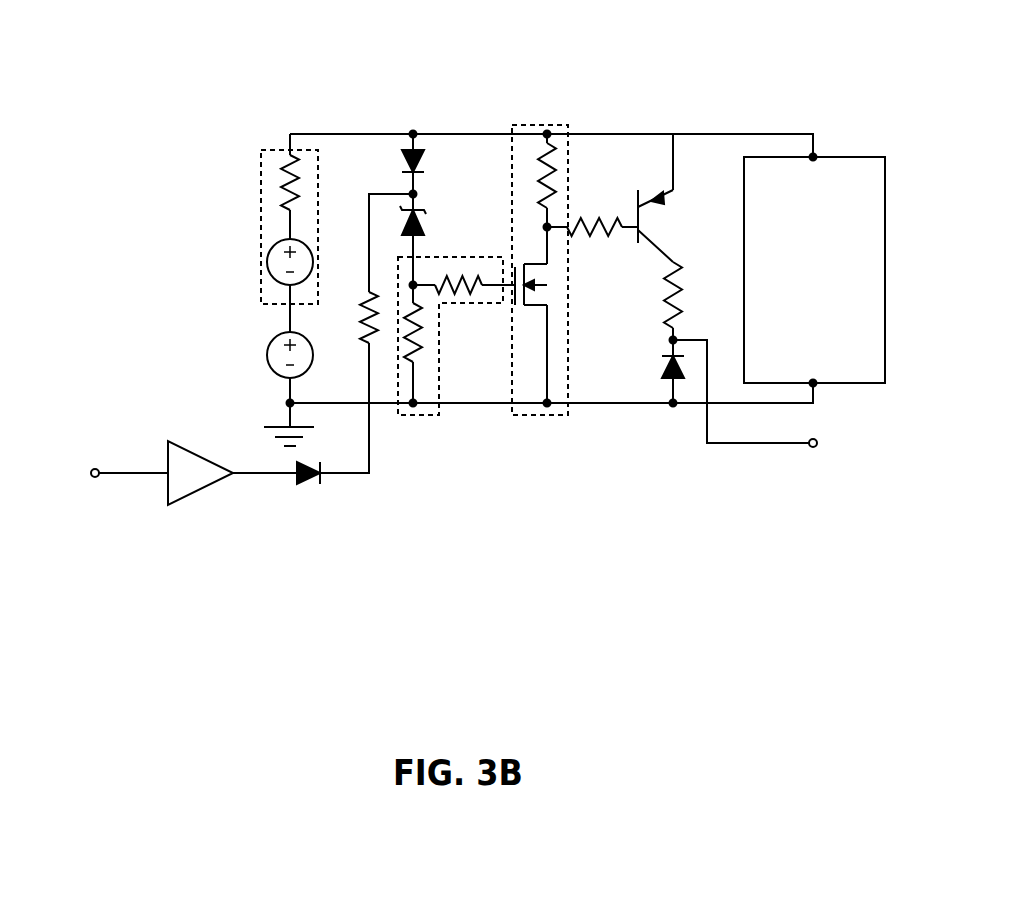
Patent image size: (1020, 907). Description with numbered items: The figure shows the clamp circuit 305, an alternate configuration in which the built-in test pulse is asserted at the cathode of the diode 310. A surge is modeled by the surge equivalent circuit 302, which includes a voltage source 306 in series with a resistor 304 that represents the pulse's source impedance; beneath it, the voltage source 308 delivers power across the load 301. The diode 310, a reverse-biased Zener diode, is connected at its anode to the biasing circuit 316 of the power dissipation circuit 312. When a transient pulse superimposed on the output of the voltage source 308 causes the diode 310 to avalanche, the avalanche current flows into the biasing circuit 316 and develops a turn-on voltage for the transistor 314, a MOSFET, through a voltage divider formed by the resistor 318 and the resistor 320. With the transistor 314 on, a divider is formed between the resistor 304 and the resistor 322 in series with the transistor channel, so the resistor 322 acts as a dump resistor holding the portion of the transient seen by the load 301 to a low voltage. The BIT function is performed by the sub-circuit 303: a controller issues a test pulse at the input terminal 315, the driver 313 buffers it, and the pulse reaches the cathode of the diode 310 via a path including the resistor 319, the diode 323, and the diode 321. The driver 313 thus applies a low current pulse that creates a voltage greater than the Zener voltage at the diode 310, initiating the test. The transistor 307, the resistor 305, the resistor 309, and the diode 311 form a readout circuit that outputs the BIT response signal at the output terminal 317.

The load 301 is at (838, 283).
The surge equivalent circuit 302 is at (261, 184).
The sub-circuit 303 is at (264, 427).
The resistor 304 is at (298, 168).
The clamp circuit 305 is at (467, 86).
The voltage source 306 is at (267, 262).
The transistor 307 is at (645, 220).
The voltage source 308 is at (266, 355).
The resistor 309 is at (680, 302).
The diode 310 is at (432, 218).
The diode 311 is at (663, 357).
The power dissipation circuit 312 is at (530, 420).
The driver 313 is at (168, 503).
The transistor 314 is at (547, 305).
The input terminal 315 is at (92, 478).
The biasing circuit 316 is at (423, 420).
The output terminal 317 is at (817, 447).
The resistor 318 is at (418, 341).
The resistor 319 is at (372, 340).
The resistor 320 is at (484, 282).
The diode 321 is at (403, 150).
The resistor 322 is at (553, 165).
The diode 323 is at (313, 482).